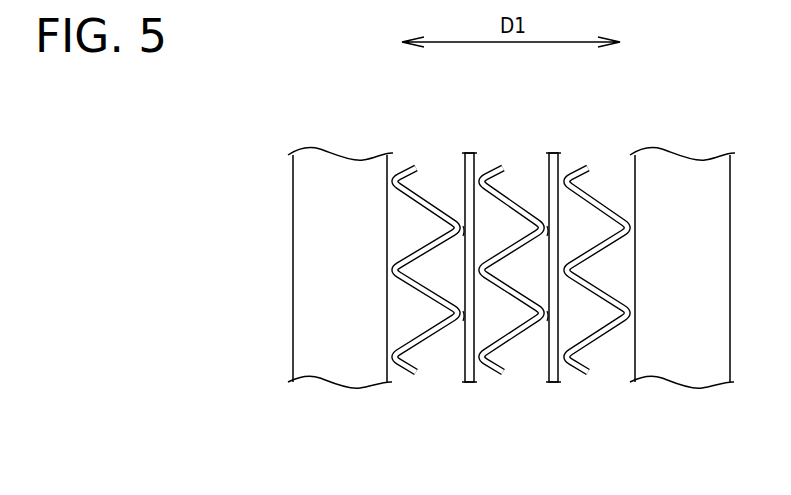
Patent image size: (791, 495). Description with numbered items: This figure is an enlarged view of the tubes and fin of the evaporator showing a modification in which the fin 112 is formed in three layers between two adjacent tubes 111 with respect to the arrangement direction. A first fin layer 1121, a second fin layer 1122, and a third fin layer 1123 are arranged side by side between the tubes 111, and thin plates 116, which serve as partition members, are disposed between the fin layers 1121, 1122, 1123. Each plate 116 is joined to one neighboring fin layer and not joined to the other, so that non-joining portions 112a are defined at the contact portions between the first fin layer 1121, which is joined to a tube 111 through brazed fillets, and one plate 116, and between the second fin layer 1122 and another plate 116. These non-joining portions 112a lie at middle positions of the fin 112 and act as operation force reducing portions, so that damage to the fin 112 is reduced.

The tube 111 is at (327, 167).
The fin 112 is at (633, 106).
The first fin layer 1121 is at (440, 207).
The second fin layer 1122 is at (523, 207).
The third fin layer 1123 is at (610, 207).
The non-joining portion 112a is at (470, 243).
The plate 116 is at (465, 381).